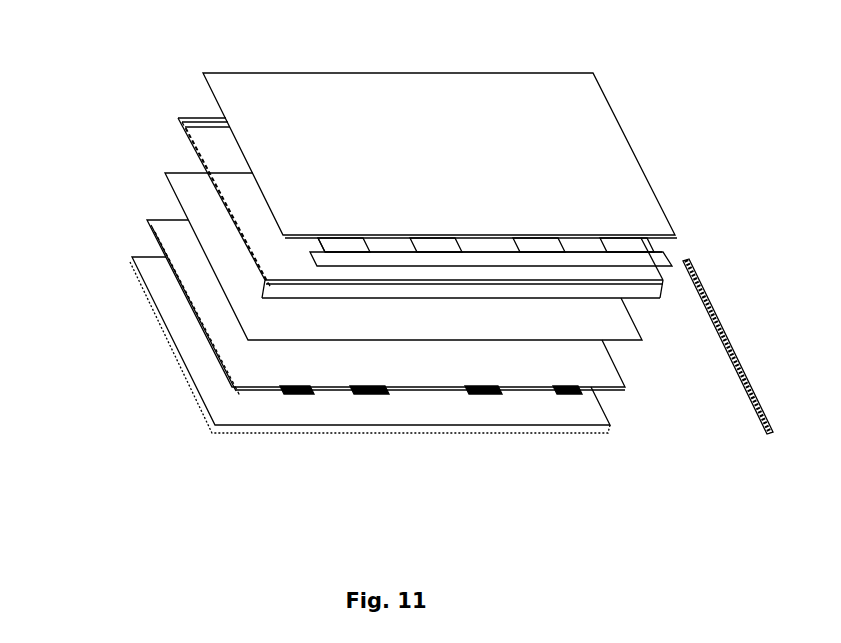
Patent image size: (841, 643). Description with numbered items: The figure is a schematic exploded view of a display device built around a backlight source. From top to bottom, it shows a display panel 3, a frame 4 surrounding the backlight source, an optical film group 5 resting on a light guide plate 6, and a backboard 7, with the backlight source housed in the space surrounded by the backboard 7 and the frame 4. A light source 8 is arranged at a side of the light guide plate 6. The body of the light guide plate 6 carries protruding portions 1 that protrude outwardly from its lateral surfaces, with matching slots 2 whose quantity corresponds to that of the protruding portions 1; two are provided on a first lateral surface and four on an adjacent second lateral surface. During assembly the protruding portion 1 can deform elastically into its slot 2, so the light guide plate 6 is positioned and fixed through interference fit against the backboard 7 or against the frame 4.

The protruding portion 1 is at (373, 393).
The slot 2 is at (205, 343).
The display panel 3 is at (208, 92).
The frame 4 is at (189, 143).
The optical film group 5 is at (174, 195).
The light guide plate 6 is at (144, 221).
The backboard 7 is at (229, 441).
The light source 8 is at (703, 262).